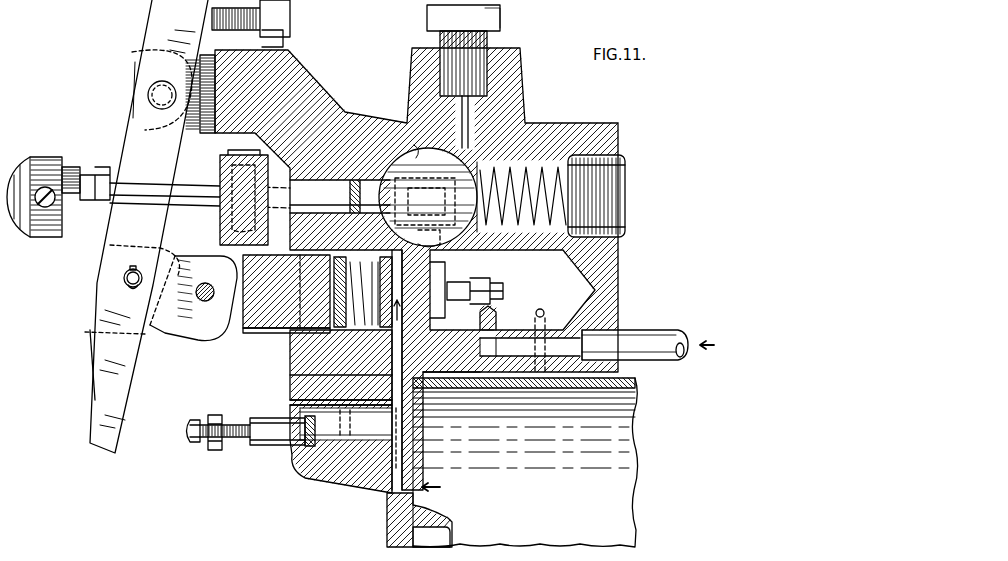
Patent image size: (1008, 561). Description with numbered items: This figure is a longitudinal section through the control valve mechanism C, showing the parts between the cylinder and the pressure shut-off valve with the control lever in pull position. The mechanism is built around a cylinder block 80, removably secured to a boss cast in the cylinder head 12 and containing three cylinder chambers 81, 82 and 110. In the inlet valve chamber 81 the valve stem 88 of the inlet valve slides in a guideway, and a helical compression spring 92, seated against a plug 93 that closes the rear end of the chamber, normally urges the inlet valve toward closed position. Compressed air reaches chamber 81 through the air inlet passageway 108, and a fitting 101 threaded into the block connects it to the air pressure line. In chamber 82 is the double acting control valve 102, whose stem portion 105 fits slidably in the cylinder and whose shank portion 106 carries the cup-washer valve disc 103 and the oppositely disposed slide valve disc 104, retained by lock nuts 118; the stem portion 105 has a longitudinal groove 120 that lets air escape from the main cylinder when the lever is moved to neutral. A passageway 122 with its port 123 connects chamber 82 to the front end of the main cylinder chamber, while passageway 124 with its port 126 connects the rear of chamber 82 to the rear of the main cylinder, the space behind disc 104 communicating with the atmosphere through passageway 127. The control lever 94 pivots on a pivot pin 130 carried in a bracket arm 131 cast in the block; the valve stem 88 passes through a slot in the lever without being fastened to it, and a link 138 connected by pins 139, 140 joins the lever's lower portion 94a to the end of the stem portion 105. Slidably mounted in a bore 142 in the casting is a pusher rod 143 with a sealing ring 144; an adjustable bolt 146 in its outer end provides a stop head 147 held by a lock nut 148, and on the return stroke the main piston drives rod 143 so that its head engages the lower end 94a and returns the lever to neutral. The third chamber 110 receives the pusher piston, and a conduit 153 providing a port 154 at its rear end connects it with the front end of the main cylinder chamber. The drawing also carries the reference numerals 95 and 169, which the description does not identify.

The control valve mechanism C is at (543, 62).
The cylinder head 12 is at (386, 533).
The cylinder block 80 is at (319, 56).
The valve chamber 81 is at (556, 178).
The cylinder chamber 82 is at (553, 262).
The valve stem 88 is at (315, 190).
The helical compression spring 92 is at (550, 165).
The plug 93 is at (620, 177).
The control lever 94 is at (136, 16).
The lower portion of lever 94a is at (94, 393).
The adjusting screw 95 is at (45, 158).
The fitting 101 is at (432, 35).
The double acting control valve 102 is at (268, 328).
The valve disc 103 is at (341, 365).
The slide valve disc 104 is at (451, 357).
The stem portion 105 is at (286, 291).
The shank portion 106 is at (458, 279).
The air inlet passageway 108 is at (468, 108).
The cylinder chamber 110 is at (416, 150).
The lock nuts 118 is at (490, 302).
The longitudinal groove 120 is at (248, 333).
The air passageway 122 is at (346, 424).
The port 123 is at (341, 391).
The passageway 124 is at (525, 345).
The port 126 is at (496, 328).
The passageway 127 is at (540, 309).
The pivot pin 130 is at (160, 95).
The bracket arm 131 is at (203, 128).
The link 138 is at (170, 318).
The pin 139 is at (205, 300).
The pin 140 is at (124, 278).
The bore 142 is at (300, 410).
The pusher rod 143 is at (275, 446).
The sealing ring 144 is at (318, 460).
The adjustable bolt 146 is at (232, 423).
The adjustable stop head 147 is at (186, 432).
The lock nut 148 is at (216, 449).
The conduit 153 is at (400, 358).
The port 154 is at (398, 230).
The block 169 is at (221, 233).